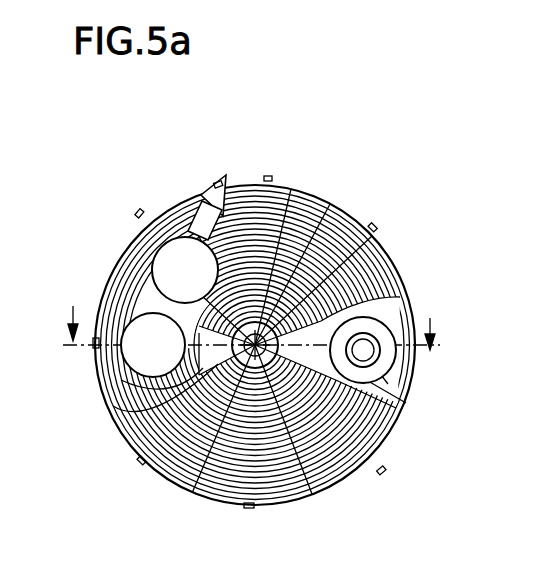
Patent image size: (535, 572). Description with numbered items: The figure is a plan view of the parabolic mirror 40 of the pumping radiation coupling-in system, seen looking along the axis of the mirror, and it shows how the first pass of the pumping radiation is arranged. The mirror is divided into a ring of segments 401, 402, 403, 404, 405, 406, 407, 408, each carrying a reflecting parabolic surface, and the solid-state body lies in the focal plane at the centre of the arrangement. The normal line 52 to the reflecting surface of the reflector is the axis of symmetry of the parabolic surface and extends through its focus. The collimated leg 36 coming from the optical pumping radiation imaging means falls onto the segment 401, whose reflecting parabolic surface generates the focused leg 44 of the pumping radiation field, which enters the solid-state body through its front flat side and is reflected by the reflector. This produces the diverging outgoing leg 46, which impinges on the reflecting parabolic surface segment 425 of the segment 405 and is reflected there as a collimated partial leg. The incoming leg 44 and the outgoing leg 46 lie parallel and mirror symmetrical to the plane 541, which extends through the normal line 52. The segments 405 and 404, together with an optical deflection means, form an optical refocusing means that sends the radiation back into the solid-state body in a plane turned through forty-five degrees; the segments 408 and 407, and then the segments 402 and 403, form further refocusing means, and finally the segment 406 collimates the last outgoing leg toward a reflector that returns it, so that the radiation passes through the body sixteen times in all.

The parabolic mirror 40 is at (338, 463).
The segment of the parabolic mirror 401 is at (405, 366).
The segment of the parabolic mirror 402 is at (383, 248).
The segment of the parabolic mirror 403 is at (287, 193).
The segment of the parabolic mirror 404 is at (157, 206).
The segment of the parabolic mirror 405 is at (95, 296).
The segment of the parabolic mirror 406 is at (160, 465).
The segment of the parabolic mirror 407 is at (261, 484).
The segment of the parabolic mirror 408 is at (375, 423).
The reflecting parabolic surface segment 425 is at (108, 258).
The focused leg of the pumping radiation field 44 is at (380, 316).
The normal line 52 is at (350, 222).
The collimated leg 36 is at (400, 381).
The outgoing leg 46 is at (107, 399).
The plane 541 is at (91, 362).